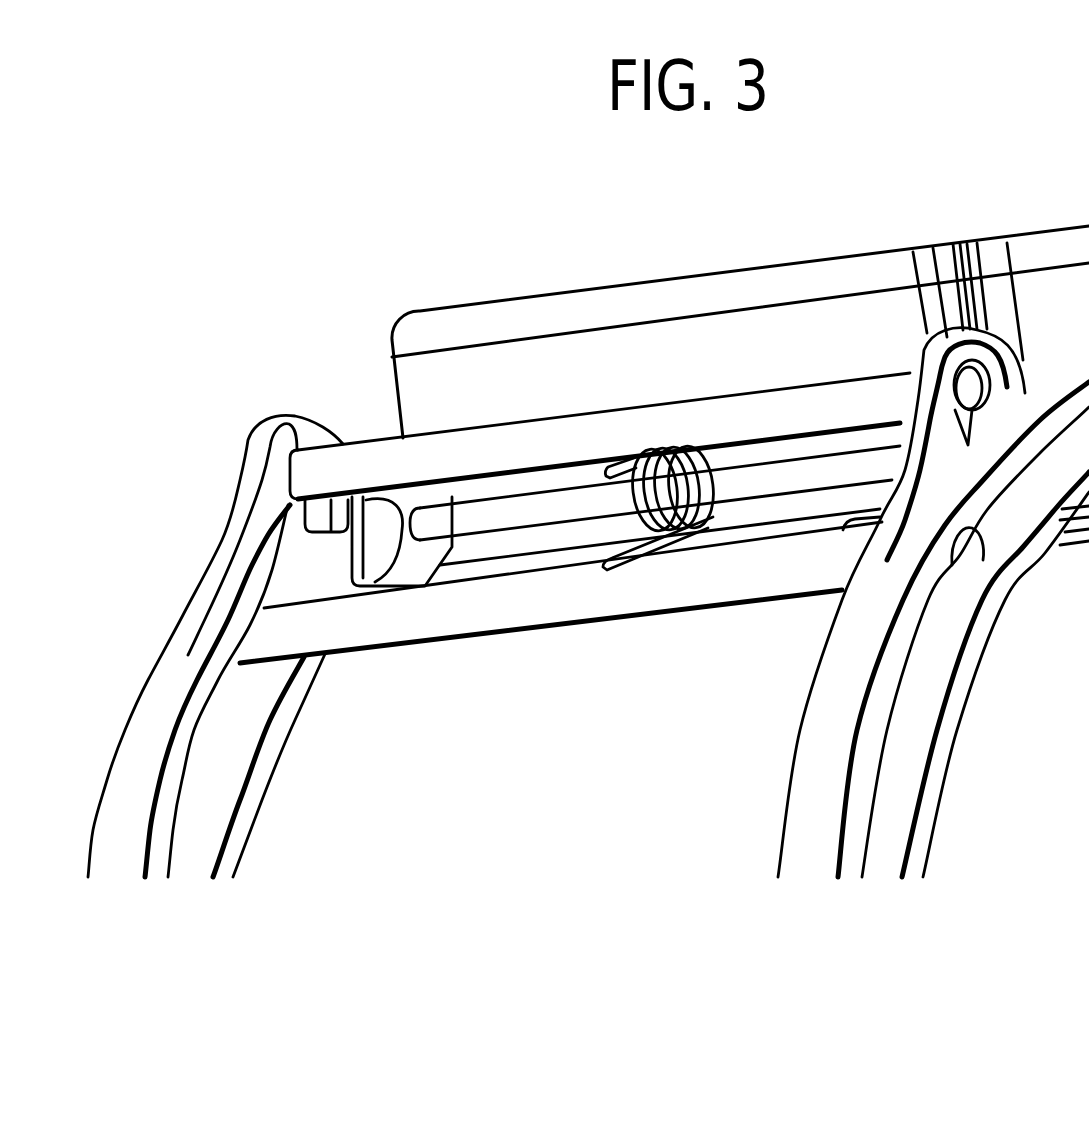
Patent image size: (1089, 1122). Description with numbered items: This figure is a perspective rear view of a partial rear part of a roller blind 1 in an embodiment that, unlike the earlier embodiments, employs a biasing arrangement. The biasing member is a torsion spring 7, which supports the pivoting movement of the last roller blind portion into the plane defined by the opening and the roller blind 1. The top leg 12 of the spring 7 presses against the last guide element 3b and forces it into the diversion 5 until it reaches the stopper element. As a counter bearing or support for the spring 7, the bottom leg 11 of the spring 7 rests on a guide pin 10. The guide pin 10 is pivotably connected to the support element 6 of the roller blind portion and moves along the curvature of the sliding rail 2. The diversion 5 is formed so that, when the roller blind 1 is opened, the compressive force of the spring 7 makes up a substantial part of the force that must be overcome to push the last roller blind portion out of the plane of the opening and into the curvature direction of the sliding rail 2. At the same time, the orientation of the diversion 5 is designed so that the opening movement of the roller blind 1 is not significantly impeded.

The roller blind 1 is at (569, 272).
The sliding rail 2 is at (908, 752).
The last guide element 3b is at (366, 456).
The diversion 5 is at (243, 490).
The support element 6 is at (740, 487).
The torsion spring 7 is at (719, 440).
The guide pin 10 is at (487, 605).
The bottom leg 11 is at (622, 570).
The top leg 12 is at (610, 473).